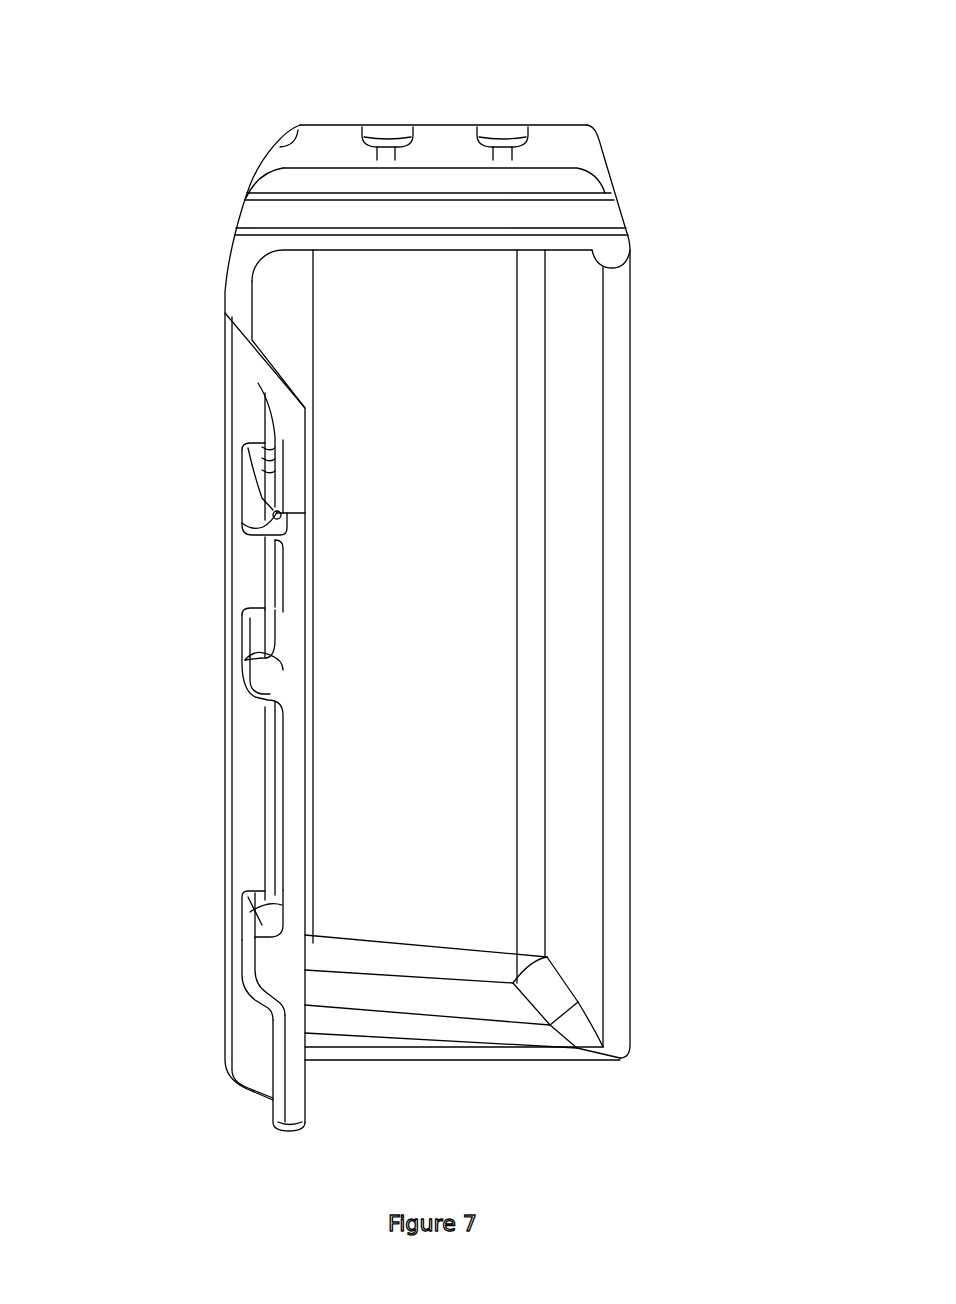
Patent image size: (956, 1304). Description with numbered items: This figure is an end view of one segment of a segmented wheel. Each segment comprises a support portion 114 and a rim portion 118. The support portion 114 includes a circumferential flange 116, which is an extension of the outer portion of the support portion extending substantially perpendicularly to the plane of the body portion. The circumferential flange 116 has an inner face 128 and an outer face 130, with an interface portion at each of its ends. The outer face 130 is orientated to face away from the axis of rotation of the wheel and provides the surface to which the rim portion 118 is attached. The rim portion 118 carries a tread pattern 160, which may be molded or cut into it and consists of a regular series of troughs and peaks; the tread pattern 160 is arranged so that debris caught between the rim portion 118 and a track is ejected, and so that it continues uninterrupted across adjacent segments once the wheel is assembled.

The support portion 114 is at (242, 290).
The circumferential flange 116 is at (610, 243).
The rim portion 118 is at (550, 177).
The inner face 128 is at (470, 252).
The outer face 130 is at (583, 195).
The tread pattern 160 is at (383, 138).